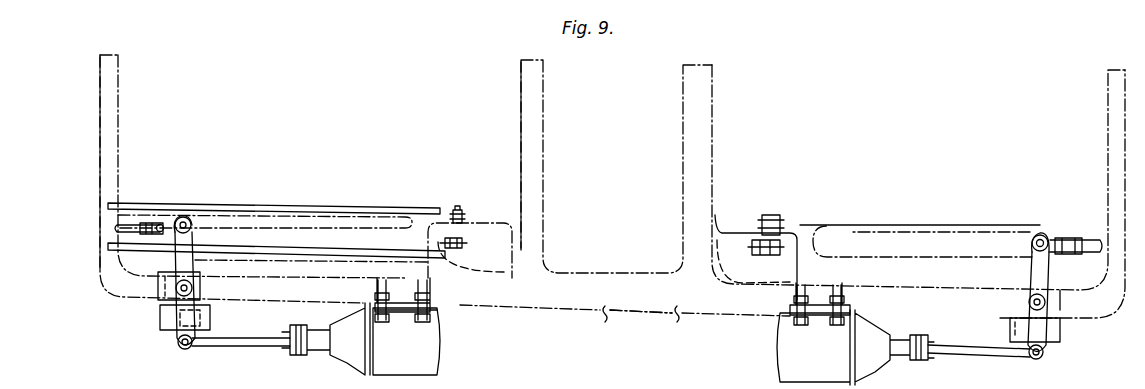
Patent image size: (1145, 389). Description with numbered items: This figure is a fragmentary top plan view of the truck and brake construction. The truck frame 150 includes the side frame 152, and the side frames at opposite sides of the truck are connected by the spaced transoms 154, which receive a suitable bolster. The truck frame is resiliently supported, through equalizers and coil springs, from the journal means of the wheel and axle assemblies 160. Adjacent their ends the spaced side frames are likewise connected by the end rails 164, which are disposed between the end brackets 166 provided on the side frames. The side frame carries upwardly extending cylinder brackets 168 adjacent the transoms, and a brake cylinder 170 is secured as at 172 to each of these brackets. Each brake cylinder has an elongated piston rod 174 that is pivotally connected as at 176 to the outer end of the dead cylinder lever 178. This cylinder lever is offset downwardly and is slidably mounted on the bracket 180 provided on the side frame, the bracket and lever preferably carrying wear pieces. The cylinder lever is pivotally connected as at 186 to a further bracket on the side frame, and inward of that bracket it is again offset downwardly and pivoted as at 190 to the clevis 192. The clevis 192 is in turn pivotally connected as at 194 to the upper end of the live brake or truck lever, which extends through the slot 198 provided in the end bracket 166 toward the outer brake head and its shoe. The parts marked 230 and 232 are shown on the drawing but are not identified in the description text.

The truck frame 150 is at (612, 200).
The side frame 152 is at (657, 327).
The transom 154 is at (542, 173).
The wheel and axle assembly 160 is at (885, 235).
The end rail 164 is at (110, 93).
The end bracket 166 is at (120, 215).
The cylinder bracket 168 is at (430, 288).
The brake cylinder 170 is at (437, 345).
The securing means for brake cylinder 172 is at (387, 314).
The piston rod 174 is at (240, 340).
The pivotal connection 176 is at (180, 344).
The dead cylinder lever 178 is at (173, 257).
The bracket 180 is at (157, 320).
The pivotal connection 186 is at (180, 290).
The pivot 190 is at (165, 226).
The clevis 192 is at (185, 215).
The pivotal connection 194 is at (157, 222).
The slot 198 is at (117, 229).
The bolt 230 is at (457, 208).
The bolt 232 is at (482, 236).